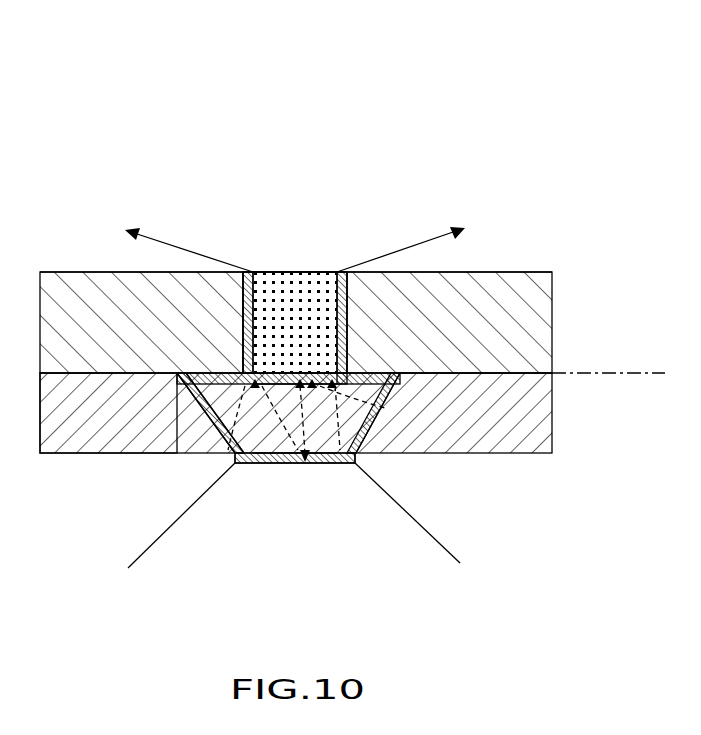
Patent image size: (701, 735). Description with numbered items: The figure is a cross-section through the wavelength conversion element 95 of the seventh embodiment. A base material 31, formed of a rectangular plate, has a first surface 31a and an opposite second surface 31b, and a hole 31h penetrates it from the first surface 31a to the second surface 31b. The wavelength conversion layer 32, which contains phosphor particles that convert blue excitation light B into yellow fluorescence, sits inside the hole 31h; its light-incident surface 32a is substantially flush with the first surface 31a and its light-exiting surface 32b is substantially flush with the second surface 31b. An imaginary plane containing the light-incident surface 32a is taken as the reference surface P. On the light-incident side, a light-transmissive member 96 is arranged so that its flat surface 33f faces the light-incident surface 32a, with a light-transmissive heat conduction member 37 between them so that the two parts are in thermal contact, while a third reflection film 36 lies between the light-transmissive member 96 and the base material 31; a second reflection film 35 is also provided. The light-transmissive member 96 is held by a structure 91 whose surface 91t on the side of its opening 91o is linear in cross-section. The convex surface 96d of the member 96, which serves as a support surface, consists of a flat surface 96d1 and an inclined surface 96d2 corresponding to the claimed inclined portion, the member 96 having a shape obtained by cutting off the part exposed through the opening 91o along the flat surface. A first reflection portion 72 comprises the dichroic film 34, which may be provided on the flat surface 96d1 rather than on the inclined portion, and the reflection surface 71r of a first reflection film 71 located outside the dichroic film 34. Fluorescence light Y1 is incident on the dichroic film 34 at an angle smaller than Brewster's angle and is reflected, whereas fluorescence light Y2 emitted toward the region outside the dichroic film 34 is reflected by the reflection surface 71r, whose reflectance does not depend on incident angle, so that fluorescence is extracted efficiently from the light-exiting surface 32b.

The base material 31 is at (450, 272).
The first surface 31a is at (540, 375).
The second surface 31b is at (512, 272).
The hole 31h is at (338, 236).
The wavelength conversion layer 32 is at (330, 272).
The light-incident surface 32a is at (291, 462).
The light-exiting surface 32b is at (297, 272).
The flat surface 33f is at (395, 374).
The dichroic film 34 is at (345, 463).
The second reflection film 35 is at (246, 290).
The third reflection film 36 is at (222, 372).
The heat conduction member 37 is at (246, 463).
The first reflection film 71 is at (182, 410).
The reflection surface 71r is at (228, 372).
The first reflection portion 72 is at (167, 395).
The structure 91 is at (517, 425).
The opening 91o is at (358, 358).
The surface 91t is at (205, 425).
The wavelength conversion element 95 is at (188, 185).
The light-transmissive member 96 is at (272, 455).
The convex surface 96d is at (184, 485).
The flat surface 96d1 is at (265, 462).
The inclined surface 96d2 is at (190, 398).
The fluorescence light Y1 is at (165, 243).
The fluorescence light Y2 is at (375, 420).
The reference surface P is at (608, 370).
The blue excitation light B is at (152, 548).